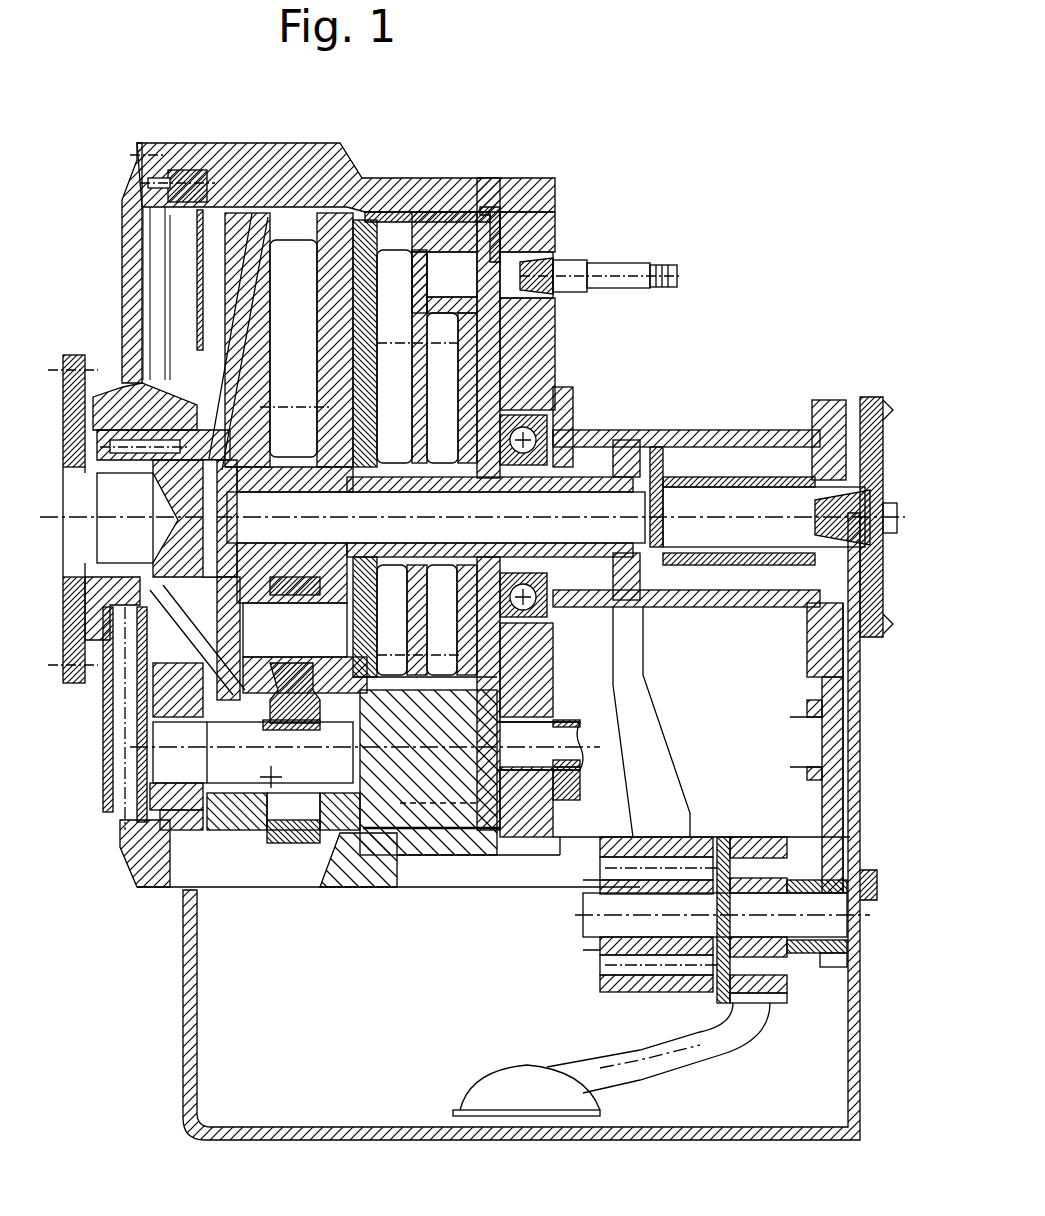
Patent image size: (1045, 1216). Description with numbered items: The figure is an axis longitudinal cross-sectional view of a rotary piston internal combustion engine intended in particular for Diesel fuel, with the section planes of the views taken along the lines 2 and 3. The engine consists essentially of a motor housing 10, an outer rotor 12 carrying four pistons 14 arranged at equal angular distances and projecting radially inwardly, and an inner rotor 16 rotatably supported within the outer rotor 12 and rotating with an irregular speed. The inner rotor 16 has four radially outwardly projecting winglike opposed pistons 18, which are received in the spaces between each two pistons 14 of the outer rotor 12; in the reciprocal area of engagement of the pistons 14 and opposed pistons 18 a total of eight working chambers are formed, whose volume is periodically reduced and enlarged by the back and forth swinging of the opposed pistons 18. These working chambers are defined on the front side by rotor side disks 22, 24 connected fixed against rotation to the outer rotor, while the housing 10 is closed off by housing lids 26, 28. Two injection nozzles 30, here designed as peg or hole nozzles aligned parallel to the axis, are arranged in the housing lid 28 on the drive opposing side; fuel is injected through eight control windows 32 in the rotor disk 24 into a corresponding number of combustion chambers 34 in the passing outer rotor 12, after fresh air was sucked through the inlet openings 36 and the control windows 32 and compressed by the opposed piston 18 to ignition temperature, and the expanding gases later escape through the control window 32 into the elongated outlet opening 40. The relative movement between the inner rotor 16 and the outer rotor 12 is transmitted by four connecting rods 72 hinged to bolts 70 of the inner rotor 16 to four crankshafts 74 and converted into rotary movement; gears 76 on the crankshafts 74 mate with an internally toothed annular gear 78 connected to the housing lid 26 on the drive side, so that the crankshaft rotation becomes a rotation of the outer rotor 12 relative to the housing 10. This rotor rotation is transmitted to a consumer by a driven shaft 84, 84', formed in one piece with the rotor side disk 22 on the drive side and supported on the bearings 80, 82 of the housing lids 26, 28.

The section line 2- 2 is at (477, 987).
The section line 3- 3 is at (497, 955).
The motor housing 10 is at (383, 195).
The outer rotor 12 is at (460, 200).
The pistons 14 is at (432, 760).
The inner rotor 16 is at (467, 650).
The opposed pistons 18 is at (406, 200).
The rotor side disk 22 is at (330, 267).
The rotor side disk 24 is at (505, 370).
The housing lid 26 is at (130, 263).
The housing lid 28 is at (545, 230).
The injection nozzles 30 is at (553, 250).
The control windows 32 is at (520, 235).
The combustion chambers 34 is at (498, 215).
The inlet openings 36 is at (520, 750).
The outlet opening 40 is at (520, 750).
The bolts 70 is at (313, 623).
The connecting rods 72 is at (292, 600).
The crankshafts 74 is at (240, 760).
The gears 76 is at (137, 855).
The internally toothed annular gear 78 is at (163, 893).
The bearing 80 is at (102, 640).
The bearing 82 is at (573, 430).
The driven shaft 84 is at (65, 519).
The motor shaft 84' is at (780, 494).